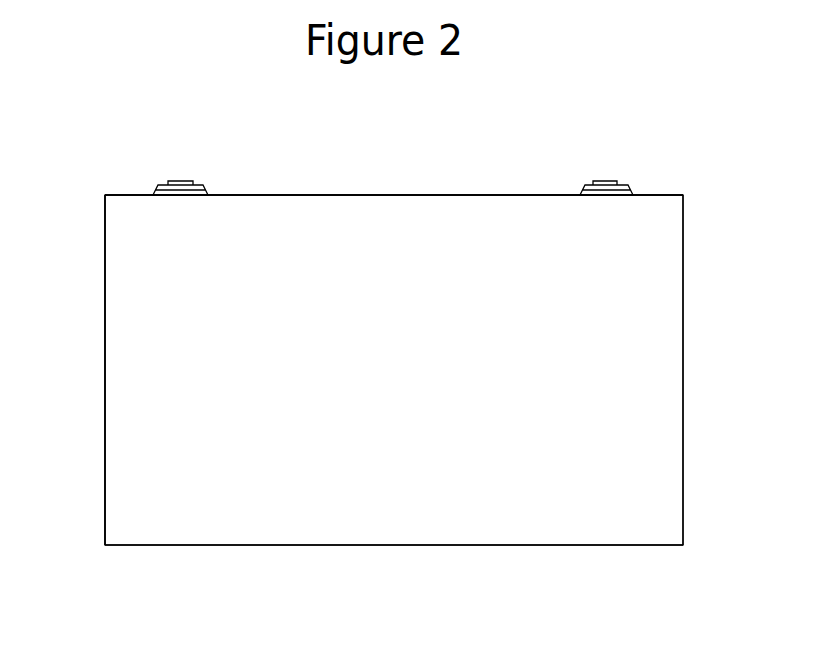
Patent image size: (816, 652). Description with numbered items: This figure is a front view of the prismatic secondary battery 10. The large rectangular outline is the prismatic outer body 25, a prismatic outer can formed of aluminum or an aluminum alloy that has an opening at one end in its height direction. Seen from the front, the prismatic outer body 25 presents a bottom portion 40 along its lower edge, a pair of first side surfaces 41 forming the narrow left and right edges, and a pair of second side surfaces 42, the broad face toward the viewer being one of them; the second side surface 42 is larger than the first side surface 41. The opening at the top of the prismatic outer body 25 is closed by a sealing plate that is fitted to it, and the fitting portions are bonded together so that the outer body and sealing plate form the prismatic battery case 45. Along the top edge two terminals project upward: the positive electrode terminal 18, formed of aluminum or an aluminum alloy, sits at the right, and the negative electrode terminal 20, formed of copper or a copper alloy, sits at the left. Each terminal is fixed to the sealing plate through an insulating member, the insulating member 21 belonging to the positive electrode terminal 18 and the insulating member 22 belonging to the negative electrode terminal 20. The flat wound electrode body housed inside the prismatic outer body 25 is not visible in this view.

The prismatic secondary battery 10 is at (298, 170).
The positive electrode terminal 18 is at (601, 178).
The negative electrode terminal 20 is at (181, 178).
The insulating member 21 is at (627, 188).
The insulating member 22 is at (203, 188).
The prismatic outer body 25 is at (150, 333).
The bottom portion 40 is at (385, 547).
The first side surface 41 is at (105, 265).
The second side surface 42 is at (178, 388).
The battery case 45 is at (384, 228).